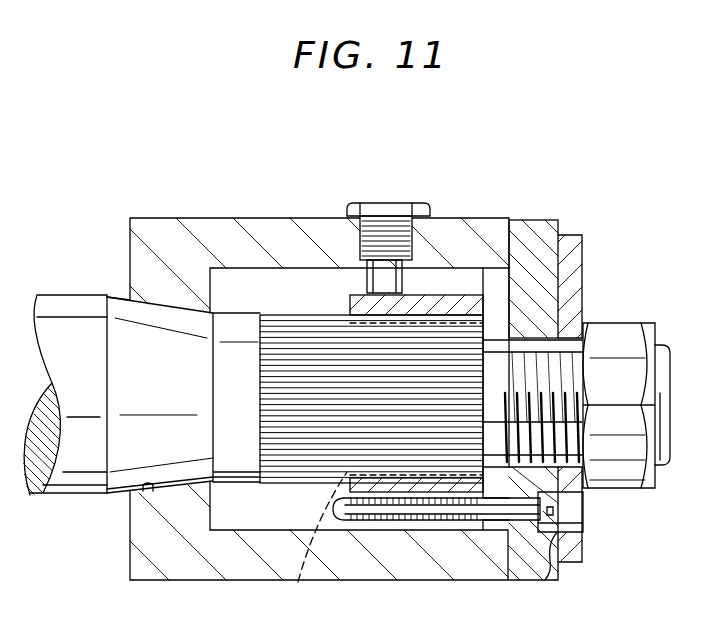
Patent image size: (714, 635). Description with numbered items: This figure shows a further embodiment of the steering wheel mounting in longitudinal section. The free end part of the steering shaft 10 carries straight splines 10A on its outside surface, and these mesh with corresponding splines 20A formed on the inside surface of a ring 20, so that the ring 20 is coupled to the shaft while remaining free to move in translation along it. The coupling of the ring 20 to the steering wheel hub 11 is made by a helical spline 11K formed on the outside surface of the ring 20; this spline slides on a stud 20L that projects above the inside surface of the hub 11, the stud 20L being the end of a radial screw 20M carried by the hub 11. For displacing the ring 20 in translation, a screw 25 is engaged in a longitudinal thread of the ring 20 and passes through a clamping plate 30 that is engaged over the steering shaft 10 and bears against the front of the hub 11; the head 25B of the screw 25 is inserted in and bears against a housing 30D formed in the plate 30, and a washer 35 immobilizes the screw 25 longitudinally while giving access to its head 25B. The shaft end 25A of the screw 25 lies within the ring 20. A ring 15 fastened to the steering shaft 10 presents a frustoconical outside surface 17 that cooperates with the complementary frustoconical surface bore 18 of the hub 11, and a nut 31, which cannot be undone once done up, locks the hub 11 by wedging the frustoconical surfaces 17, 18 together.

The steering shaft 10 is at (90, 398).
The straight splines 10A is at (270, 376).
The steering wheel hub 11 is at (247, 240).
The helical spline 11K is at (463, 283).
The ring 15 is at (165, 452).
The frustoconical outside surface 17 is at (118, 294).
The frustoconical surface bore 18 is at (146, 492).
The ring 20 is at (425, 526).
The splines 20A is at (317, 543).
The stud 20L is at (402, 280).
The radial screw 20M is at (365, 240).
The screw 25 is at (370, 528).
The screw end 25A is at (476, 510).
The head of the screw 25B is at (556, 503).
The clamping plate 30 is at (538, 235).
The housing 30D is at (548, 535).
The nut 31 is at (643, 338).
The washer 35 is at (576, 258).